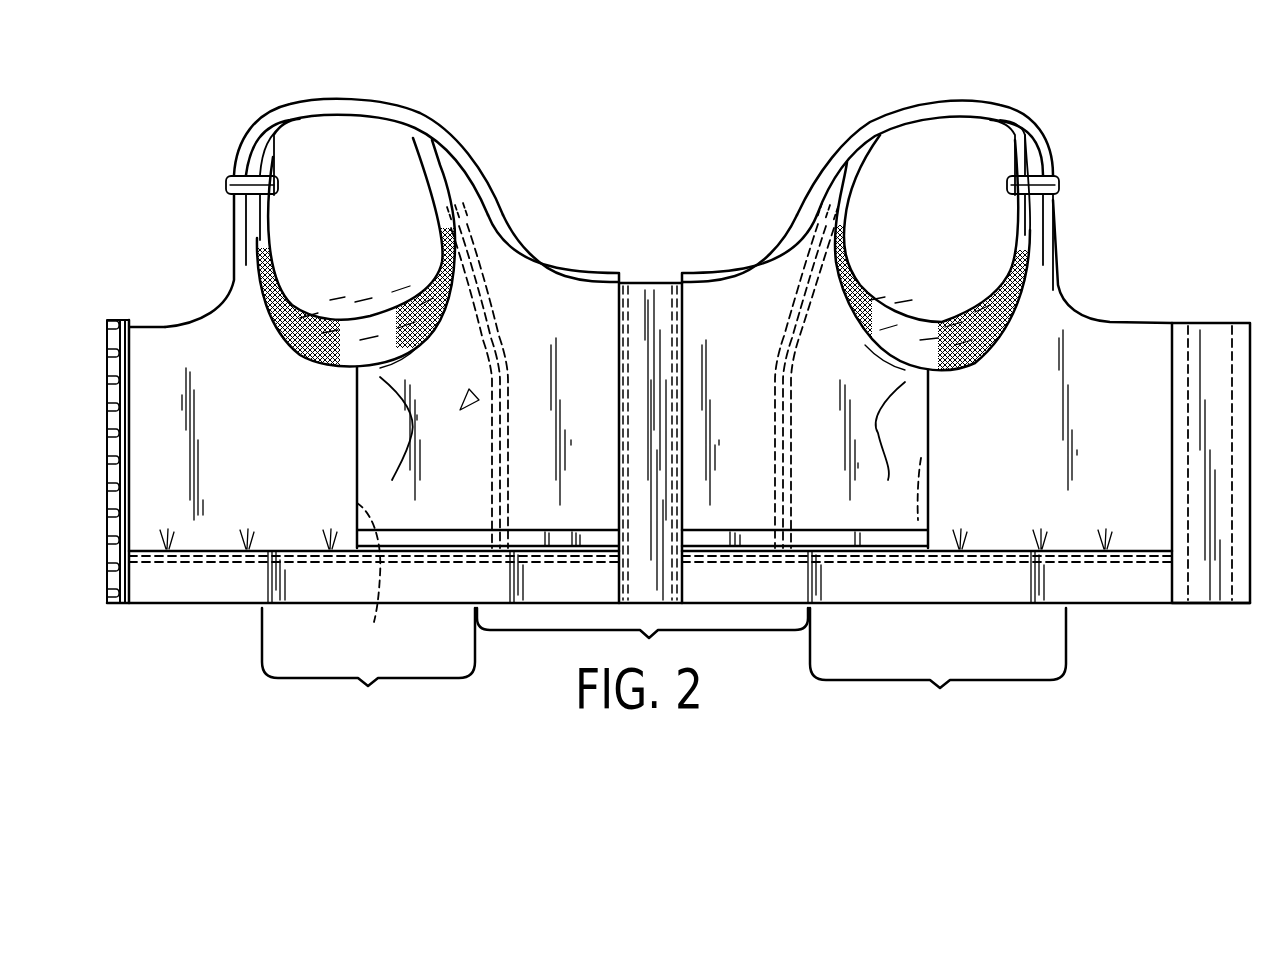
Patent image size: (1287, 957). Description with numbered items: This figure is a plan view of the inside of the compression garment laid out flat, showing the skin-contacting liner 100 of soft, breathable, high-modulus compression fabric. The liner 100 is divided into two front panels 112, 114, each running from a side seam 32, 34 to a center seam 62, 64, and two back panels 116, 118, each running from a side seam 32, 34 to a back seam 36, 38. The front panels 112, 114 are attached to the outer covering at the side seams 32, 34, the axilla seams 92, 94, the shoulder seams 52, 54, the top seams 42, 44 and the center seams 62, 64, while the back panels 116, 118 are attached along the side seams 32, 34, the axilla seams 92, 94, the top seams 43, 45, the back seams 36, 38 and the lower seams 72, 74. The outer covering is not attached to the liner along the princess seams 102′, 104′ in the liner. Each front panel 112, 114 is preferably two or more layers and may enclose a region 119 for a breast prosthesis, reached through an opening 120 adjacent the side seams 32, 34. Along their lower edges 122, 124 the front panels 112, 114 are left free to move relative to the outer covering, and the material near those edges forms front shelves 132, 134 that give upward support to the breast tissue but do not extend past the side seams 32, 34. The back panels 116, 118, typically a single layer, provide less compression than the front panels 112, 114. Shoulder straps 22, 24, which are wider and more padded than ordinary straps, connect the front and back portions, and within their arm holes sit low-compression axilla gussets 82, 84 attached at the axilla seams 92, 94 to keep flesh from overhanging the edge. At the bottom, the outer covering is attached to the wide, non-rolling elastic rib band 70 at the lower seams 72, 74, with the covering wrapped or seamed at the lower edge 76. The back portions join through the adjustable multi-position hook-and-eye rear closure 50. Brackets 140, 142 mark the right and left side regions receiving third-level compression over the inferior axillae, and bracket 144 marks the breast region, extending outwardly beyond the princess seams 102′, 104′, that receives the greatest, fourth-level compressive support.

The shoulder strap 22 is at (933, 103).
The shoulder strap 24 is at (338, 102).
The side seam 32 is at (930, 430).
The side seam 34 is at (357, 431).
The back seam 36 is at (1172, 432).
The back seam 38 is at (127, 468).
The top seam 42 is at (777, 247).
The top seam 43 is at (1087, 313).
The top seam 44 is at (528, 262).
The top seam 45 is at (161, 318).
The rear closure 50 is at (107, 422).
The shoulder seam 52 is at (832, 207).
The shoulder seam 54 is at (445, 195).
The center seam 62 is at (682, 343).
The center seam 64 is at (620, 338).
The rib band 70 is at (415, 592).
The lower seam 72 is at (937, 560).
The lower seam 74 is at (223, 560).
The lower edge 76 is at (280, 602).
The axilla gusset 82 is at (922, 333).
The axilla gusset 84 is at (358, 328).
The axilla seam 92 is at (892, 354).
The axilla seam 94 is at (403, 348).
The liner 100 is at (462, 407).
The princess seam 102′ is at (798, 318).
The princess seam 104′ is at (483, 312).
The front panel 112 is at (752, 415).
The front panel 114 is at (604, 415).
The back panel 116 is at (1067, 457).
The back panel 118 is at (237, 454).
The region 119 is at (377, 615).
The opening 120 is at (418, 475).
The lower edge 122 is at (807, 536).
The lower edge 124 is at (528, 532).
The front shelf 132 is at (768, 536).
The front shelf 134 is at (563, 531).
The bracket 140 is at (938, 664).
The bracket 142 is at (368, 664).
The bracket 144 is at (642, 638).